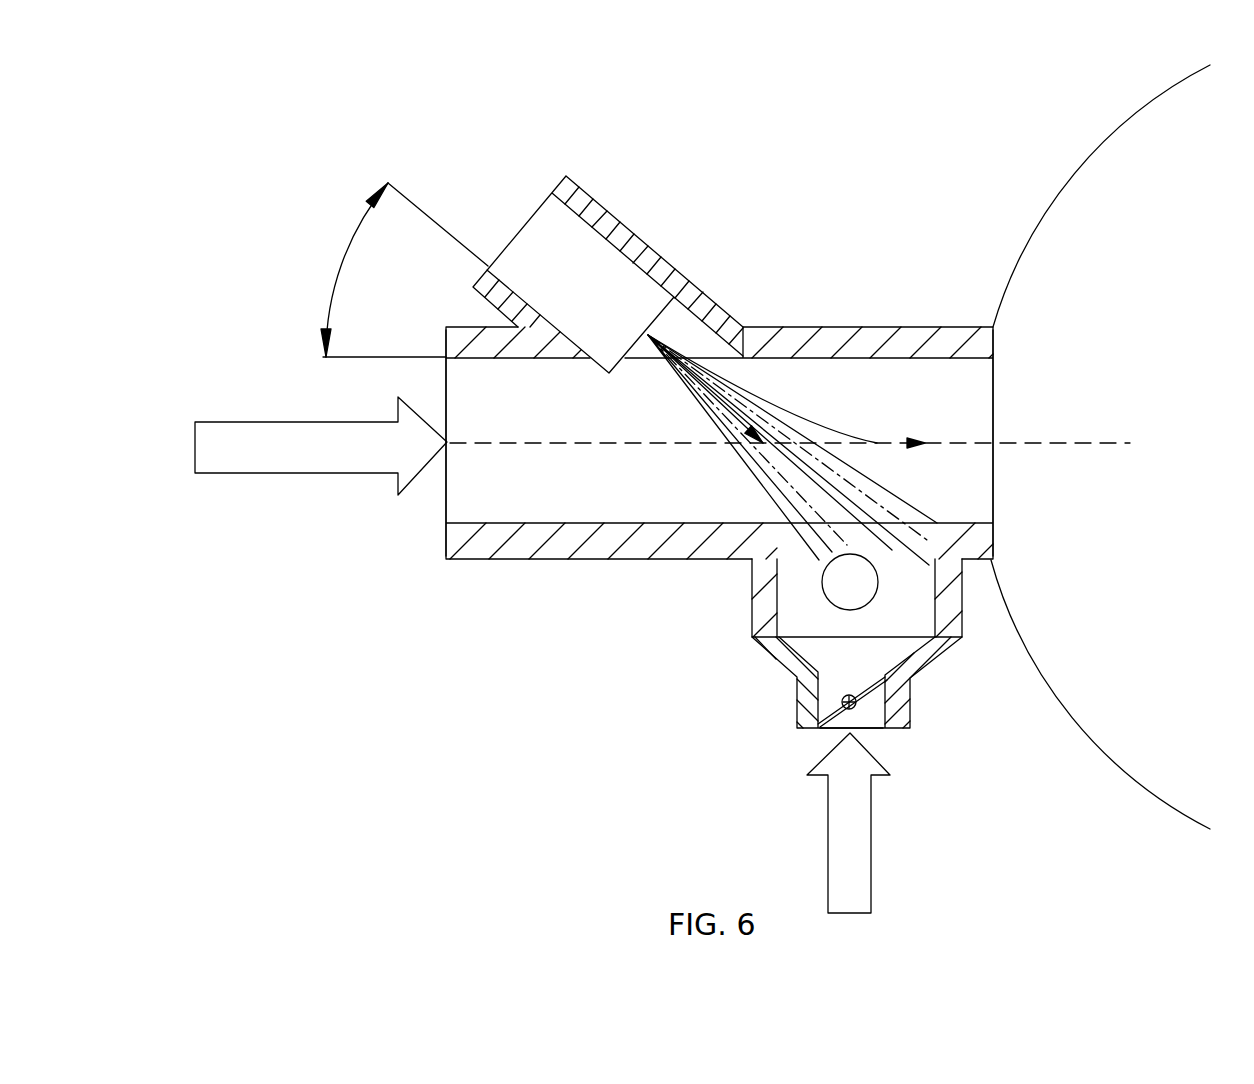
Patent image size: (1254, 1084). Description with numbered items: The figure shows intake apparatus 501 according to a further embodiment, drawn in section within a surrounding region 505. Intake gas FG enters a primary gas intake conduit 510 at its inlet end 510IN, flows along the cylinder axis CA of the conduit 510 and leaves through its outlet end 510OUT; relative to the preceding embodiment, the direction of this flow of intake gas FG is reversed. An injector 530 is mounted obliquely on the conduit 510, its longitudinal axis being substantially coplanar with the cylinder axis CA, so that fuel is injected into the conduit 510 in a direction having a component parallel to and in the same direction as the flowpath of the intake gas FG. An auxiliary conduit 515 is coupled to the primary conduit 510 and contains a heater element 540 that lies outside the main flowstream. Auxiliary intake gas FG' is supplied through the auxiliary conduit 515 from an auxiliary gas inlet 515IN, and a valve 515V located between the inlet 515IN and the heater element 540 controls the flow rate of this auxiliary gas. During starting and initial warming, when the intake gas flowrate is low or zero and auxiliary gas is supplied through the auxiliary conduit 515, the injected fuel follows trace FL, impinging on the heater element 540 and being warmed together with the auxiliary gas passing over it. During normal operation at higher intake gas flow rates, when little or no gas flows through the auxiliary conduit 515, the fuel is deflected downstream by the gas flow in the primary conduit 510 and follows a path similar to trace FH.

The intake apparatus 501 is at (742, 479).
The vessel / tank wall 505 is at (1131, 260).
The primary gas intake conduit 510 is at (593, 540).
The conduit inlet 510IN is at (440, 498).
The conduit outlet 510OUT is at (1017, 378).
The auxiliary conduit 515 is at (762, 593).
The chamber inlet 515IN is at (818, 737).
The chamber inlet valve 515V is at (868, 702).
The injector 530 is at (603, 275).
The heater element 540 is at (816, 580).
The cylinder axis CA is at (550, 443).
The flow of intake gas FG is at (321, 472).
The flow of auxiliary intake gas FG' is at (874, 823).
The fuel flowpath at low gas flowrate FL is at (738, 417).
The fuel flowpath at high gas flowrate FH is at (855, 433).